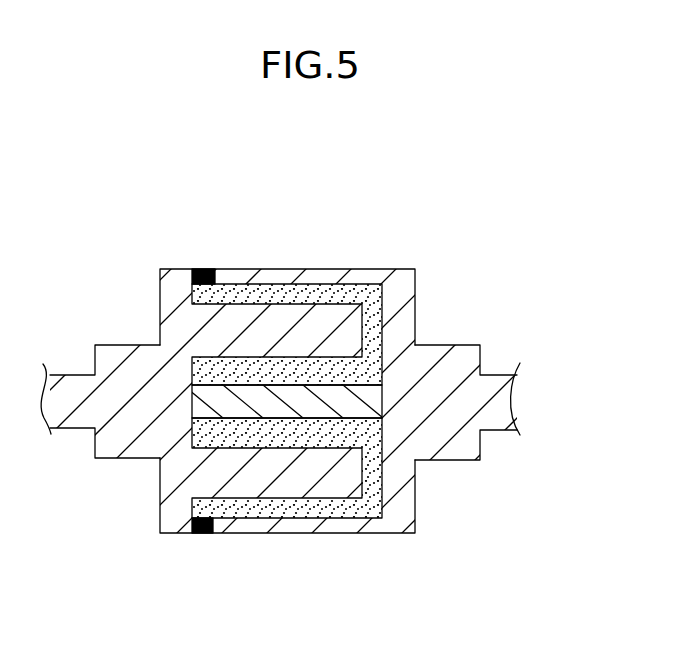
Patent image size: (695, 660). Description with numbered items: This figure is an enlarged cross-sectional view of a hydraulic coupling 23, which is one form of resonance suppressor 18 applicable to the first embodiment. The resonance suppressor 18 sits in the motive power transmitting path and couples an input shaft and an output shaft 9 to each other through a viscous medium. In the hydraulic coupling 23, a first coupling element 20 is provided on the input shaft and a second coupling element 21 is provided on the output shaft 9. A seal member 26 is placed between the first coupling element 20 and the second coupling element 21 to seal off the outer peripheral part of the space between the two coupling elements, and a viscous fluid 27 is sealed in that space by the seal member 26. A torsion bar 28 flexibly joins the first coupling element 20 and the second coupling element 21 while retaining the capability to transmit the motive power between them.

The output shaft 9 is at (497, 383).
The resonance suppressor 18 is at (347, 399).
The first coupling element 20 is at (408, 507).
The second coupling element 21 is at (173, 470).
The hydraulic coupling 23 is at (488, 283).
The seal member 26 is at (202, 268).
The viscous fluid 27 is at (301, 290).
The torsion bar 28 is at (363, 395).